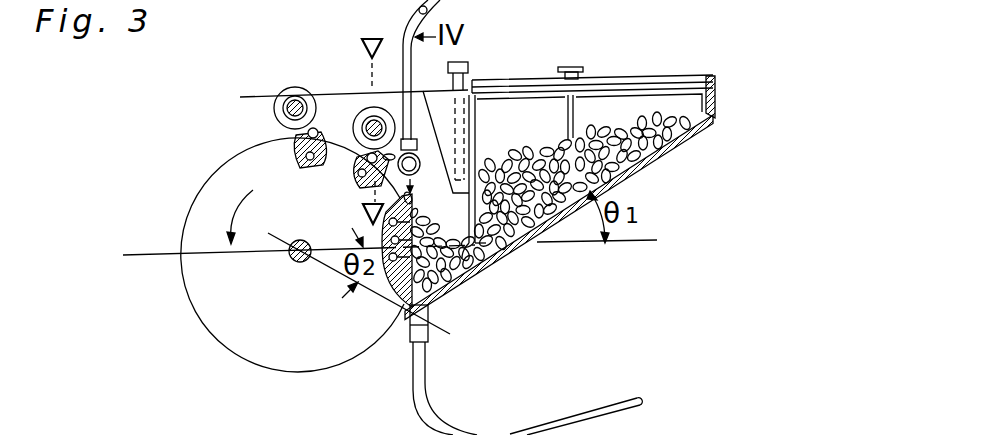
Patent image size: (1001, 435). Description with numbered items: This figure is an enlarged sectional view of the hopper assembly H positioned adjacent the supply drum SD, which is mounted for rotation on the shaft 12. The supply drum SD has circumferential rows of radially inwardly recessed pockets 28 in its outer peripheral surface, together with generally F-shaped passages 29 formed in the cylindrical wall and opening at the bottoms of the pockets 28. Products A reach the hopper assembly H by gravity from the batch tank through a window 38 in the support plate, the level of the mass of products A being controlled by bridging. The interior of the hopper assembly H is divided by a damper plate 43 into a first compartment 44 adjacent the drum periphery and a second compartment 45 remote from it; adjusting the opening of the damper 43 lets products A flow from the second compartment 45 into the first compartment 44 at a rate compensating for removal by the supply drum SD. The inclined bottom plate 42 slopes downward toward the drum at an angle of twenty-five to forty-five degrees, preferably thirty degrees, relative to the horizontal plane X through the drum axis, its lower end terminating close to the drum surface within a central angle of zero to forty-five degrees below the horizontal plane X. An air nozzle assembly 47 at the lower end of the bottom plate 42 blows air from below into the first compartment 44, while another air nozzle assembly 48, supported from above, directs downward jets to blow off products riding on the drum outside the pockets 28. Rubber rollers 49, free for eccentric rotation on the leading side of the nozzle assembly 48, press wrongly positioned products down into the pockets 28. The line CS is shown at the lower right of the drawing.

The shaft 12 is at (289, 258).
The pockets 28 is at (406, 308).
The F-shaped passages 29 is at (299, 152).
The window 38 is at (667, 108).
The inclined bottom plate 42 is at (603, 172).
The damper plate 43 is at (472, 240).
The first compartment 44 is at (433, 140).
The second compartment 45 is at (543, 125).
The air nozzle assembly 47 is at (422, 308).
The air nozzle assembly 48 is at (402, 141).
The rubber rollers 49 is at (283, 100).
The hopper assembly H is at (527, 70).
The products A is at (643, 157).
The horizontal plane X is at (286, 255).
The supply drum SD is at (248, 322).
The conveyor tube CS is at (650, 396).